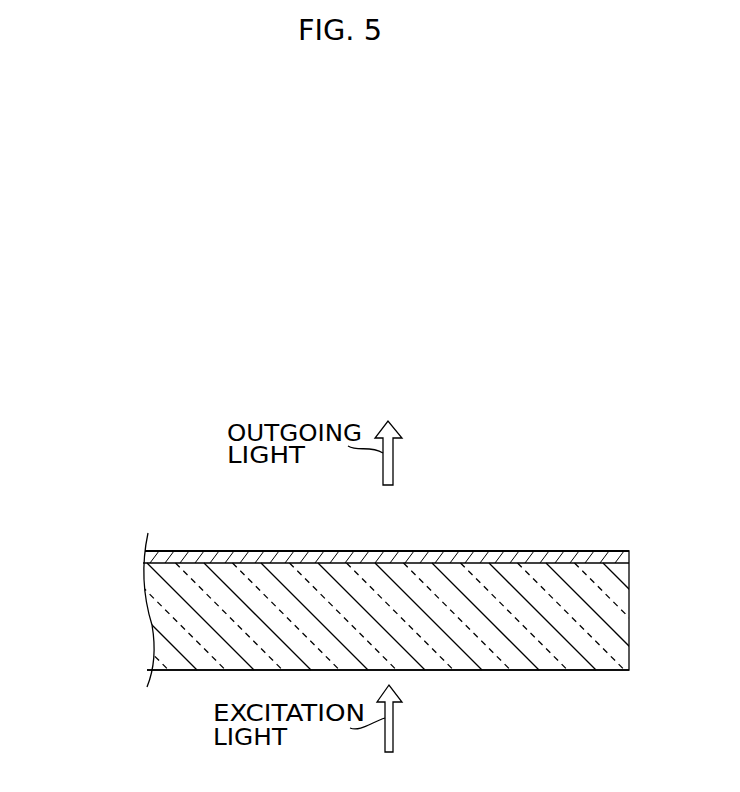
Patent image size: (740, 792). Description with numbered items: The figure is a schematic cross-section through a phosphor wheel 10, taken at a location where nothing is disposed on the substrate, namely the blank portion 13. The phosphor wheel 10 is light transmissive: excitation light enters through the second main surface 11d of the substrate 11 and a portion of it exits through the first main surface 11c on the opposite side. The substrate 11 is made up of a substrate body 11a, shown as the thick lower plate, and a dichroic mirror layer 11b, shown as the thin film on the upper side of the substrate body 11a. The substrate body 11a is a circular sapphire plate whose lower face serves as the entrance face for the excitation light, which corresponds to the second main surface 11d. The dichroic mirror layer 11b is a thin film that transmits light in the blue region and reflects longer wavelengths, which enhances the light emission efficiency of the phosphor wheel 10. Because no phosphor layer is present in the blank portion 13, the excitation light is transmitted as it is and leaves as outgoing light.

The phosphor wheel 10 is at (200, 384).
The substrate 11 is at (78, 548).
The substrate body 11a is at (148, 620).
The dichroic mirror layer 11b is at (143, 553).
The first main surface 11c is at (565, 548).
The second main surface 11d is at (576, 672).
The blank portion 13 is at (388, 548).